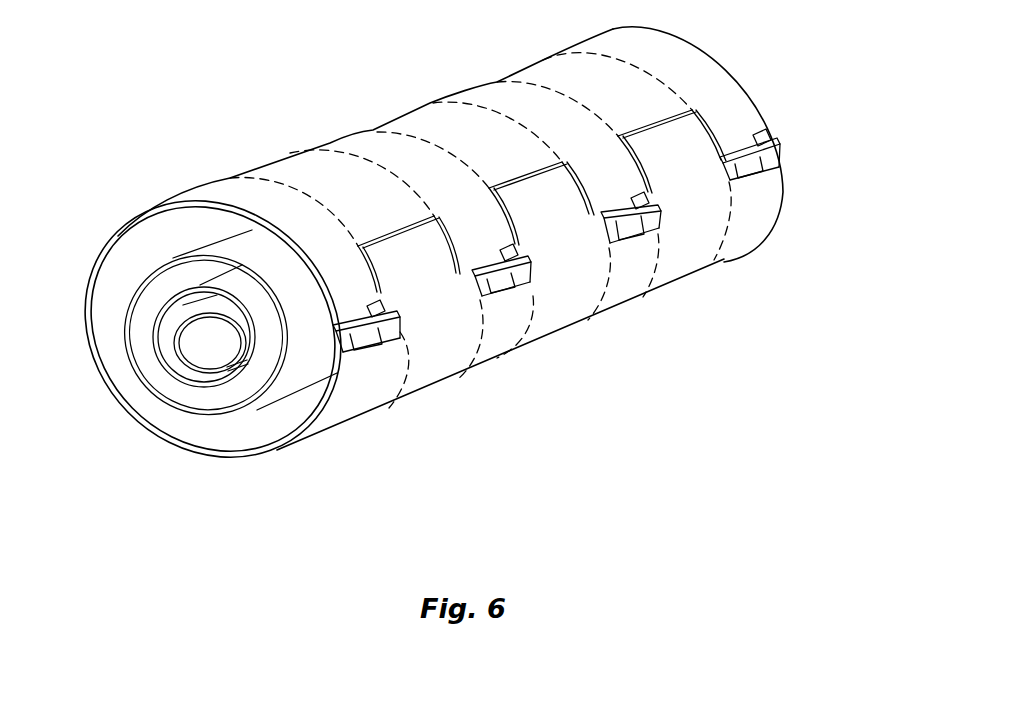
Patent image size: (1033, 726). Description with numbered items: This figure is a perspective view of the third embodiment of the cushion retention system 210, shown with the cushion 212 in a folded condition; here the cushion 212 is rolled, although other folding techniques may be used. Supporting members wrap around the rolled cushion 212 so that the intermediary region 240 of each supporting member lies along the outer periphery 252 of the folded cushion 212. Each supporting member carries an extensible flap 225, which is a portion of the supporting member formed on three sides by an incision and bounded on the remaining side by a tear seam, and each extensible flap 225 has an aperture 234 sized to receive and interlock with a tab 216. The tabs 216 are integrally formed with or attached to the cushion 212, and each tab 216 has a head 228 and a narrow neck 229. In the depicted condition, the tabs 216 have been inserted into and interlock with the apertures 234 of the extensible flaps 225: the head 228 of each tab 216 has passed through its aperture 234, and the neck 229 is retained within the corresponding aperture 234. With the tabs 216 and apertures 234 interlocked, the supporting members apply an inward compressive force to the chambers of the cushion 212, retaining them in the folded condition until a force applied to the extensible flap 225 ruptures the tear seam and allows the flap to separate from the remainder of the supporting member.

The cushion retention system 210 is at (170, 155).
The cushion 212 is at (154, 441).
The outer periphery 252 is at (82, 297).
The intermediary region 240 is at (356, 282).
The narrow neck 229 is at (334, 327).
The tab 216 is at (396, 326).
The head 228 is at (397, 341).
The aperture 234 is at (386, 307).
The extensible flap 225 is at (372, 348).